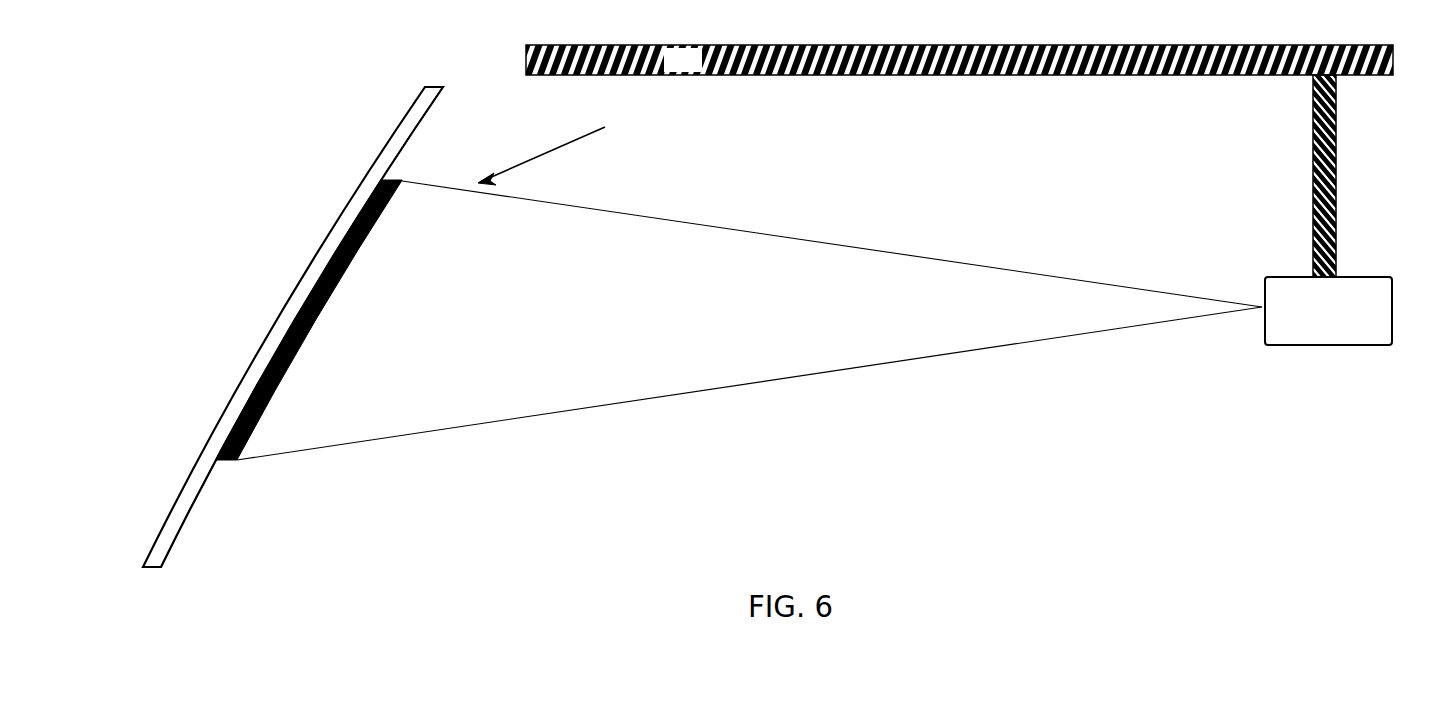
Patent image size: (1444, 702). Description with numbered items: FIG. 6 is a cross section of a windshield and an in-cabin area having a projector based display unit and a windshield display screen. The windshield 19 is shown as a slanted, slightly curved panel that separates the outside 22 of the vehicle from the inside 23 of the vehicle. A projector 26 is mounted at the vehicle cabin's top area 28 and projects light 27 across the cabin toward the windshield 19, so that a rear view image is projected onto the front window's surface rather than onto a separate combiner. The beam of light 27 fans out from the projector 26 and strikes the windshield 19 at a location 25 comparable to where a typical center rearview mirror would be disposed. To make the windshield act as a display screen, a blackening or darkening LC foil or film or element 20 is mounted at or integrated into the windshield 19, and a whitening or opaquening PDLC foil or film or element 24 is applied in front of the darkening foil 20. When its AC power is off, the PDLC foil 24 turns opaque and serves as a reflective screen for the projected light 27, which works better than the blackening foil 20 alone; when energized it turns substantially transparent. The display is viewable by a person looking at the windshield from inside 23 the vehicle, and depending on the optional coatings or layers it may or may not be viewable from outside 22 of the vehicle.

The windshield 19 is at (396, 175).
The darkening foil 20 is at (412, 183).
The outside of the vehicle 22 is at (293, 327).
The inside of the vehicle 23 is at (749, 407).
The PDLC foil 24 is at (418, 186).
The location 25 is at (554, 149).
The projector 26 is at (1328, 311).
The light 27 is at (832, 249).
The top area 28 is at (959, 161).